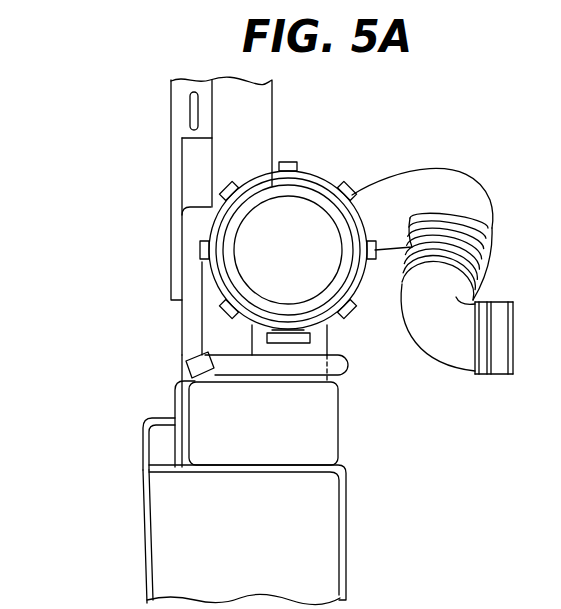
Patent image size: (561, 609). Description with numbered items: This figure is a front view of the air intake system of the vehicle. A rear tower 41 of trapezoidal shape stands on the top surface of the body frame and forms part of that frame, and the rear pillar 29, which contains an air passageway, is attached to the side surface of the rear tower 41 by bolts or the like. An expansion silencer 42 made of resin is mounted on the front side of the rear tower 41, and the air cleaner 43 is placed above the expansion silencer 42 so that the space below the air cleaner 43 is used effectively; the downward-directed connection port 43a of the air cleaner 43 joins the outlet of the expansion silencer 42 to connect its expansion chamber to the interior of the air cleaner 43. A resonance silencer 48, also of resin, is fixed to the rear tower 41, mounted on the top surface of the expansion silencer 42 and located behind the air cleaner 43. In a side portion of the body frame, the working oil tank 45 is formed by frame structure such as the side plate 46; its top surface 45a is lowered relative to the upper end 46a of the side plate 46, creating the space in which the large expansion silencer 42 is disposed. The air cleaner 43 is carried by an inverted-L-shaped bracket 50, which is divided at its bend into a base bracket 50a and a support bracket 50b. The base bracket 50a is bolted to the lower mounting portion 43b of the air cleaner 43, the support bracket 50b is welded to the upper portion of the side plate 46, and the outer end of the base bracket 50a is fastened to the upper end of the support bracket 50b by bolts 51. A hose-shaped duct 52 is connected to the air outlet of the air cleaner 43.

The rear pillar 29 is at (171, 193).
The rear tower 41 is at (180, 153).
The expansion silencer 42 is at (330, 407).
The air cleaner 43 is at (315, 190).
The connection port (air inlet) 43a is at (250, 350).
The lower portion (mounting portion) 43b is at (252, 337).
The working oil tank 45 is at (325, 520).
The top surface 45a is at (243, 462).
The side plate 46 is at (143, 520).
The upper end 46a is at (158, 418).
The resonance silencer 48 is at (182, 238).
The bracket 50 is at (115, 406).
The base bracket 50a is at (183, 382).
The support bracket 50b is at (175, 408).
The bolts 51 is at (203, 352).
The hose-shaped duct 52 is at (389, 178).